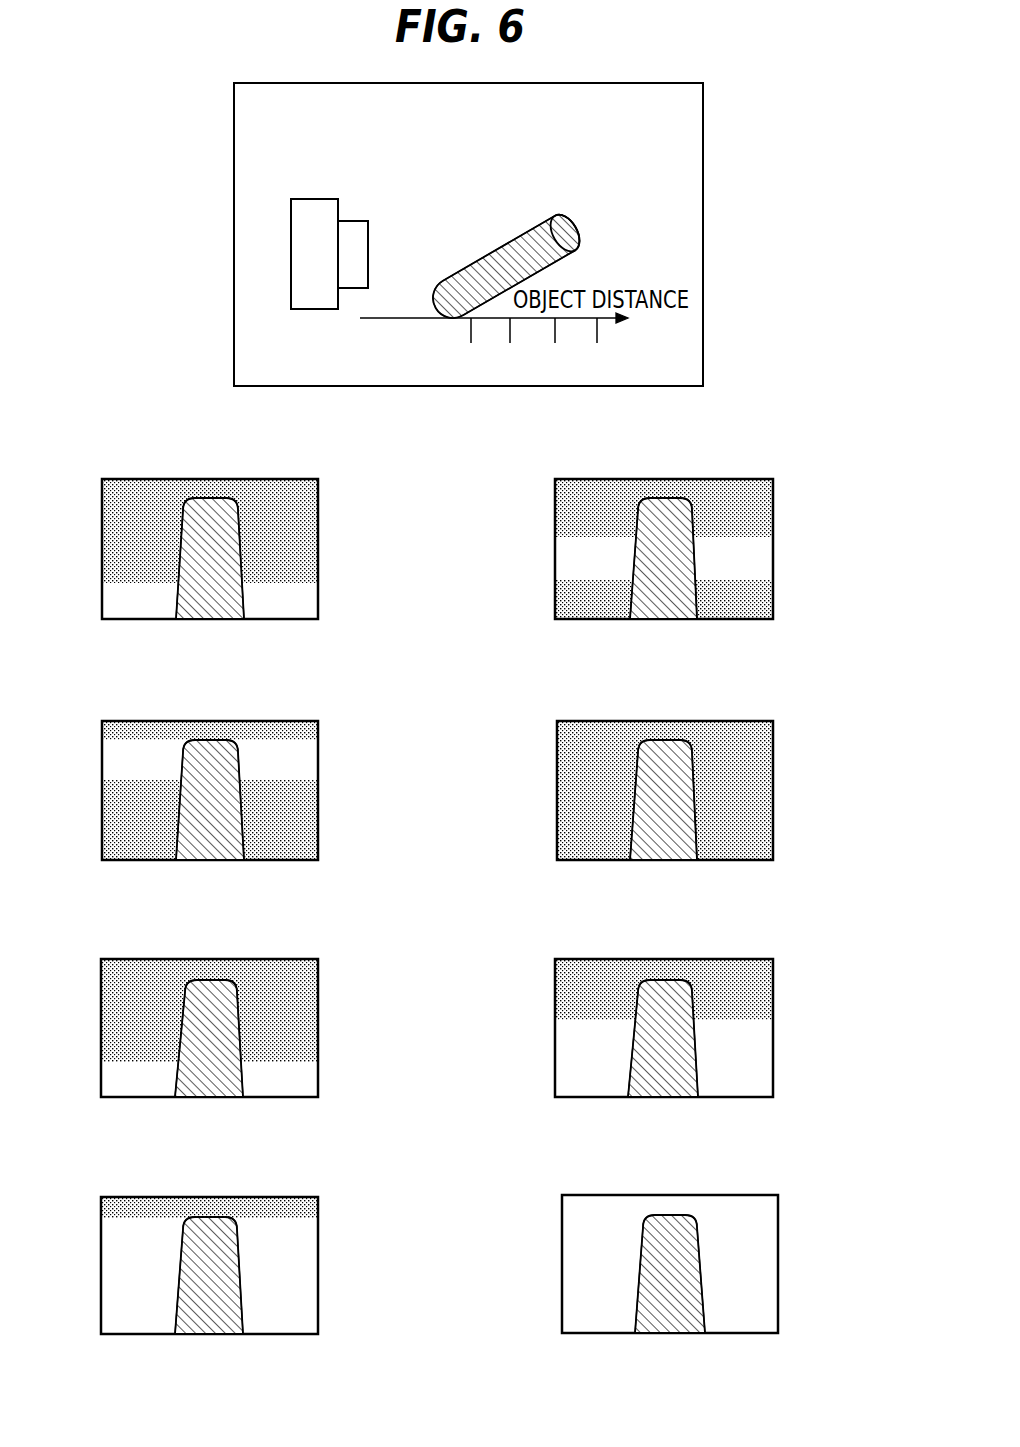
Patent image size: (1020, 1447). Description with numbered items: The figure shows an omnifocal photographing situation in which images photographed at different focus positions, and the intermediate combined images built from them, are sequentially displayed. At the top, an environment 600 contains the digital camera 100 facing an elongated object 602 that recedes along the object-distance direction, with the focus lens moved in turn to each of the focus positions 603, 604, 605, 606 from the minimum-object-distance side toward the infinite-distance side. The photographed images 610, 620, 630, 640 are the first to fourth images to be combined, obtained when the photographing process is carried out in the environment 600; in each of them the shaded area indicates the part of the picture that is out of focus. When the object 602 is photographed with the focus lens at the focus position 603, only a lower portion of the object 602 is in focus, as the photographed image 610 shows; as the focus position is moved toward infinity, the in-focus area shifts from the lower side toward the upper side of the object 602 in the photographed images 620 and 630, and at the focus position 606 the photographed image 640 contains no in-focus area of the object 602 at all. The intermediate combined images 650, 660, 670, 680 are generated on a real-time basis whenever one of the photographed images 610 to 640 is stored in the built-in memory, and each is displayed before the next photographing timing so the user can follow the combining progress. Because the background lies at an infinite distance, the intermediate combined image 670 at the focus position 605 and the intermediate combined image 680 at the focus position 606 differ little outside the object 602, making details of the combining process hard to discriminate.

The environment 600 is at (707, 75).
The digital camera 100 is at (313, 199).
The object 602 is at (590, 203).
The focus position 603 is at (471, 343).
The focus position 604 is at (510, 343).
The focus position 605 is at (555, 343).
The focus position 606 is at (597, 343).
The photographed image 610 is at (387, 443).
The photographed image 620 is at (840, 443).
The photographed image 630 is at (389, 683).
The photographed image 640 is at (840, 683).
The intermediate combined image 650 is at (417, 919).
The intermediate combined image 660 is at (870, 919).
The intermediate combined image 670 is at (417, 1154).
The intermediate combined image 680 is at (870, 1154).